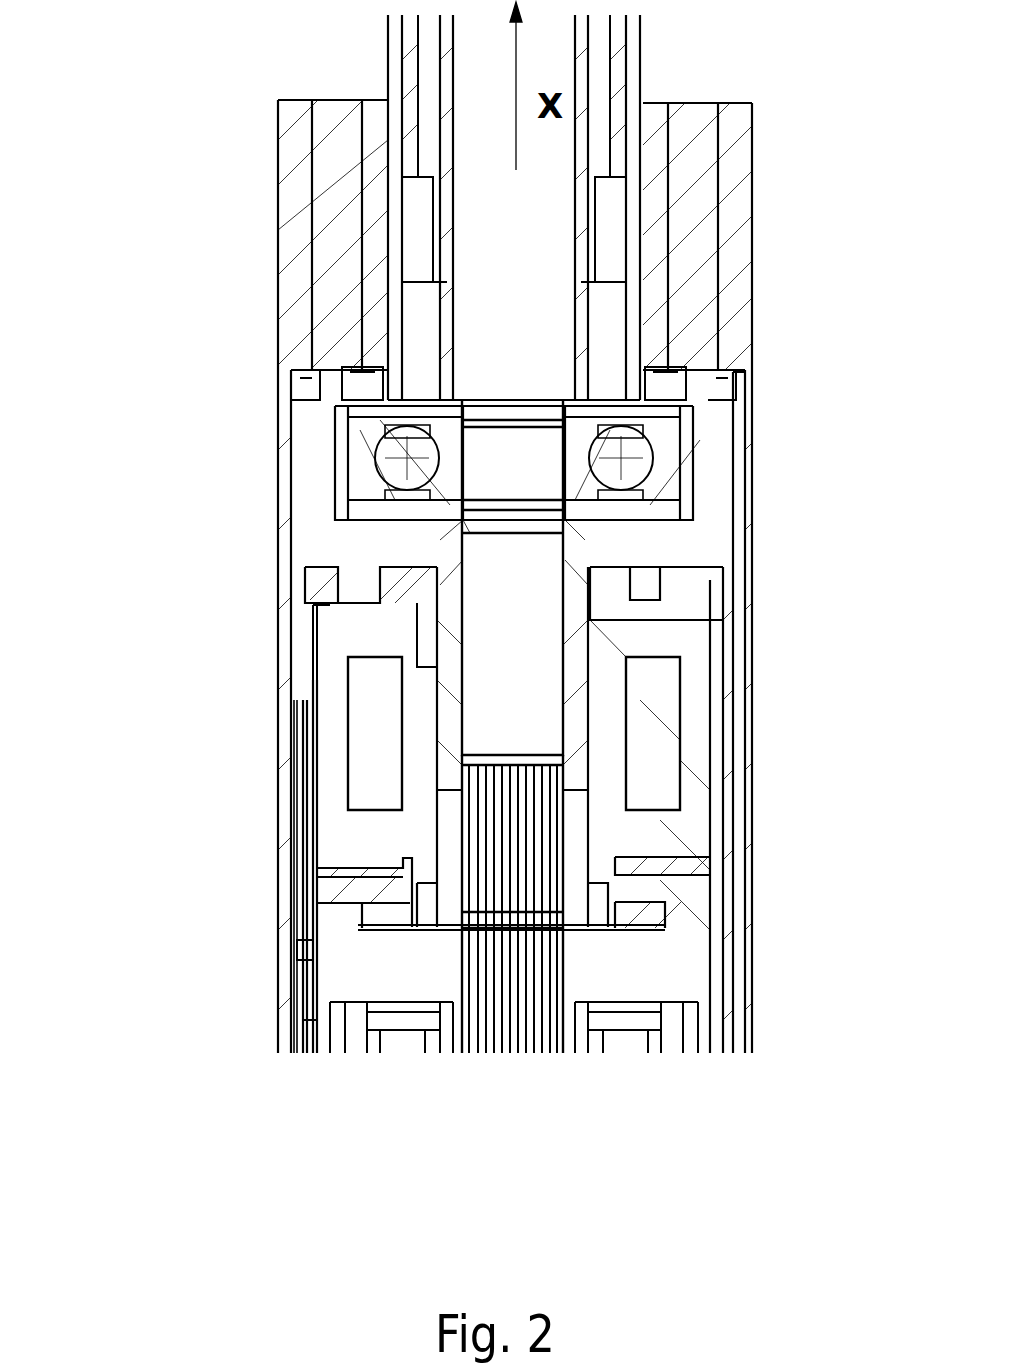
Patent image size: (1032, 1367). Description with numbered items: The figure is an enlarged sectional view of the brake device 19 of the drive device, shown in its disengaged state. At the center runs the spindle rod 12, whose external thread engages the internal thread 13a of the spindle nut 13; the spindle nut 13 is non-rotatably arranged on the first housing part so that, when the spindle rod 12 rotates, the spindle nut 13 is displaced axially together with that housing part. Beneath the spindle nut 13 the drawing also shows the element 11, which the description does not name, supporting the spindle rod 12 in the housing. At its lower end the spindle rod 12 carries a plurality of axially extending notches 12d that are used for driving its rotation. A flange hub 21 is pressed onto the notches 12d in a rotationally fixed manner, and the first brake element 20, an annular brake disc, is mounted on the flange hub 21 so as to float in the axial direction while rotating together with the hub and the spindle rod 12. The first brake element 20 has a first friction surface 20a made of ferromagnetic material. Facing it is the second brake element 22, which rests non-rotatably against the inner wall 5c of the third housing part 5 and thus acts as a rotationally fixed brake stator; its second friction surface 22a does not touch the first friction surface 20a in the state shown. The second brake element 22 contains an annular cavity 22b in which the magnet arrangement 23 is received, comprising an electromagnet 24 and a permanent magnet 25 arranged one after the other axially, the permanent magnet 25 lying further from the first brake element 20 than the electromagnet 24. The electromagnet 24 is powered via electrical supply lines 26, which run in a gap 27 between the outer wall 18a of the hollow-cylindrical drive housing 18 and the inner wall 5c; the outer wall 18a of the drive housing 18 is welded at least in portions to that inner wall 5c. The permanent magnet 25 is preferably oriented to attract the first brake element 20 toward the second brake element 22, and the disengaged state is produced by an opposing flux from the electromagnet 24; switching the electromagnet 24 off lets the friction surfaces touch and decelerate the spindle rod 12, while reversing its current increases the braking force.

The third housing part 5 is at (290, 482).
The inner wall of the third housing part 5c is at (287, 1000).
The bearing 11 is at (632, 448).
The spindle rod 12 is at (532, 623).
The notches 12d is at (563, 965).
The spindle nut 13 is at (422, 242).
The internal thread 13a is at (452, 163).
The drive housing 18 is at (297, 920).
The outer wall of the drive housing 18a is at (290, 1030).
The brake device 19 is at (314, 662).
The first brake element 20 is at (682, 888).
The first friction surface 20a is at (405, 878).
The flange hub 21 is at (573, 830).
The second brake element 22 is at (687, 837).
The second friction surface 22a is at (313, 868).
The annular cavity 22b is at (680, 690).
The magnet arrangement 23 is at (360, 658).
The electromagnet 24 is at (368, 705).
The permanent magnet 25 is at (370, 618).
The electrical supply lines 26 is at (290, 768).
The gap 27 is at (293, 953).